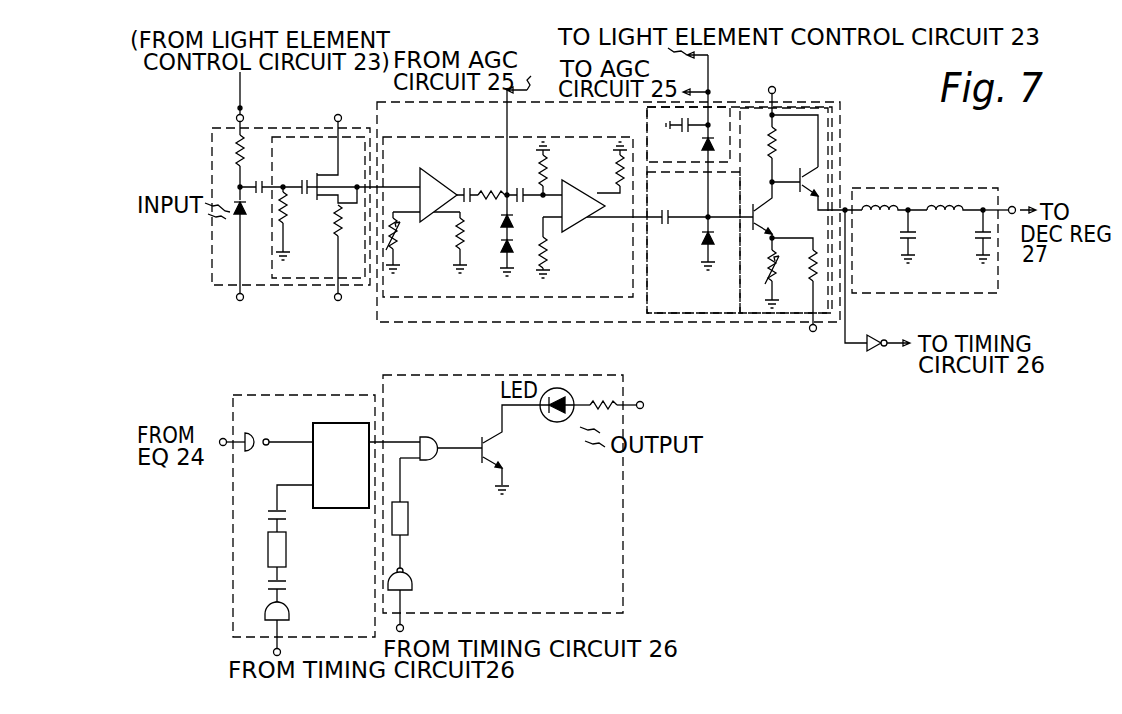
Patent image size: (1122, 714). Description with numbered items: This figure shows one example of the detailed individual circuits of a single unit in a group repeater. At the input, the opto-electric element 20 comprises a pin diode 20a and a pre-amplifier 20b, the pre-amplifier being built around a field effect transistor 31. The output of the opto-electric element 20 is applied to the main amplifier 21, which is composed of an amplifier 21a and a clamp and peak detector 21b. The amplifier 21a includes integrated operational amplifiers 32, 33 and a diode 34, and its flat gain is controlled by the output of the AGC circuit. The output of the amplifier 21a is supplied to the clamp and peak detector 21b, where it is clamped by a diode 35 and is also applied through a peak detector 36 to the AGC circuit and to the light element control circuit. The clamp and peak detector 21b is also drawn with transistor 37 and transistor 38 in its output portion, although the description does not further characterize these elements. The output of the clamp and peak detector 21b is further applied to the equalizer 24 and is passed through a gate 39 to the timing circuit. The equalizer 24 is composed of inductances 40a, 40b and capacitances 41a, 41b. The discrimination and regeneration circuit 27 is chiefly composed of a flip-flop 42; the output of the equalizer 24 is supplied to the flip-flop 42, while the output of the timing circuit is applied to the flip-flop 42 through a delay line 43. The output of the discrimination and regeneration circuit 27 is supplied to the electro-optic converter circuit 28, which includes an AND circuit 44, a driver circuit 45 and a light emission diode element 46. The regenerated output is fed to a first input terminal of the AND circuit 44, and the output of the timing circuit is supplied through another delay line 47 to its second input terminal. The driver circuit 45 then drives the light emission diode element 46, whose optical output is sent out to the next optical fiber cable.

The opto-electric element 20 is at (301, 128).
The pin diode 20a is at (230, 230).
The pre-amplifier 20b is at (282, 138).
The field effect transistor 31 is at (310, 200).
The main amplifier 21 is at (597, 322).
The amplifier 21a is at (483, 297).
The clamp and peak detector 21b is at (660, 316).
The integrated operational amplifier 32 is at (437, 175).
The integrated operational amplifier 33 is at (580, 184).
The diode 34 is at (505, 225).
The diode 35 is at (704, 239).
The peak detector 36 is at (730, 105).
The transistor 37 is at (770, 212).
The transistor 38 is at (792, 173).
The gate 39 is at (869, 356).
The equalizer 24 is at (920, 187).
The inductance 40a is at (875, 203).
The inductance 40b is at (945, 217).
The capacitance 41a is at (896, 244).
The capacitance 41b is at (976, 244).
The discrimination and regeneration circuit 27 is at (293, 393).
The flip-flop 42 is at (340, 512).
The delay line 43 is at (288, 552).
The electro-optic converter circuit 28 is at (623, 520).
The AND circuit 44 is at (427, 460).
The driver circuit 45 is at (495, 455).
The light emission diode element 46 is at (553, 423).
The delay line 47 is at (410, 518).